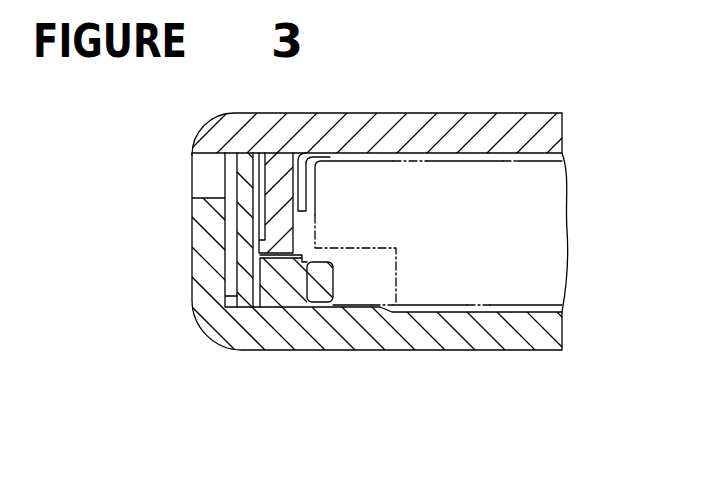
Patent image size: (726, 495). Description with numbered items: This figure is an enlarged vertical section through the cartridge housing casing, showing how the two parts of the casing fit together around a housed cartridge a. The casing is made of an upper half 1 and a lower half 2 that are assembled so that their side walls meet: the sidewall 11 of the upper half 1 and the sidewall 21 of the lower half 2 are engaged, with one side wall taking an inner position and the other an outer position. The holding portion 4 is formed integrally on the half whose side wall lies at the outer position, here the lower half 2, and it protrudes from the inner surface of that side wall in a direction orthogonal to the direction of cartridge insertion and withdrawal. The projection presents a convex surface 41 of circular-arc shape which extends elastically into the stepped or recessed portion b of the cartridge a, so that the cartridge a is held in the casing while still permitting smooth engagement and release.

The upper half 1 is at (467, 127).
The lower half 2 is at (423, 333).
The sidewall of the lower half 21 is at (238, 176).
The sidewall of the upper half 11 is at (297, 230).
The holding portion 4 is at (293, 288).
The convex surface 41 is at (332, 280).
The cartridge a is at (497, 307).
The stepped or recessed portion b is at (400, 257).